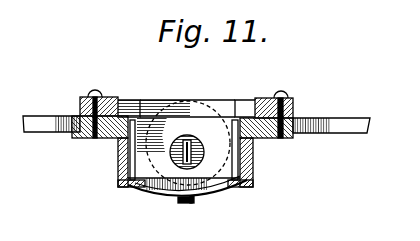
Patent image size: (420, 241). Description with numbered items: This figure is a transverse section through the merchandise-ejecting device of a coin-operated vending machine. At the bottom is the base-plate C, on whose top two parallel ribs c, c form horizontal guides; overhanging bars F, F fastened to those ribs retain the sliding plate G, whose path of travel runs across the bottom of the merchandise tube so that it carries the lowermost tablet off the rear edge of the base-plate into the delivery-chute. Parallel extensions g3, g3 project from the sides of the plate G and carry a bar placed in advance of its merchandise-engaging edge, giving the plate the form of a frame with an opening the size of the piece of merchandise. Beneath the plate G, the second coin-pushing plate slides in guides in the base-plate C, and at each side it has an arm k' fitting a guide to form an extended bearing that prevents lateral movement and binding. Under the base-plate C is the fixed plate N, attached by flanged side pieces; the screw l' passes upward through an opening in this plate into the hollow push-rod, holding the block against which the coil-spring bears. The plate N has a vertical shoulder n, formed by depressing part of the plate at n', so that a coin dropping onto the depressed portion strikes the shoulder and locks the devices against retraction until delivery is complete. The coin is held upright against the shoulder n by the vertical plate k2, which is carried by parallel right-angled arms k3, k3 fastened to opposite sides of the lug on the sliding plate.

The base-plate C is at (54, 133).
The overhanging bars F is at (110, 97).
The parallel ribs c is at (82, 98).
The arm or extension k' is at (188, 101).
The parallel extensions g3 is at (134, 100).
The plate G is at (221, 100).
The right-angled arms k3 is at (128, 160).
The vertical plate k2 is at (140, 190).
The fixed plate N is at (250, 186).
The vertical shoulder n is at (187, 199).
The depressed part n' is at (181, 215).
The screw l' is at (198, 216).